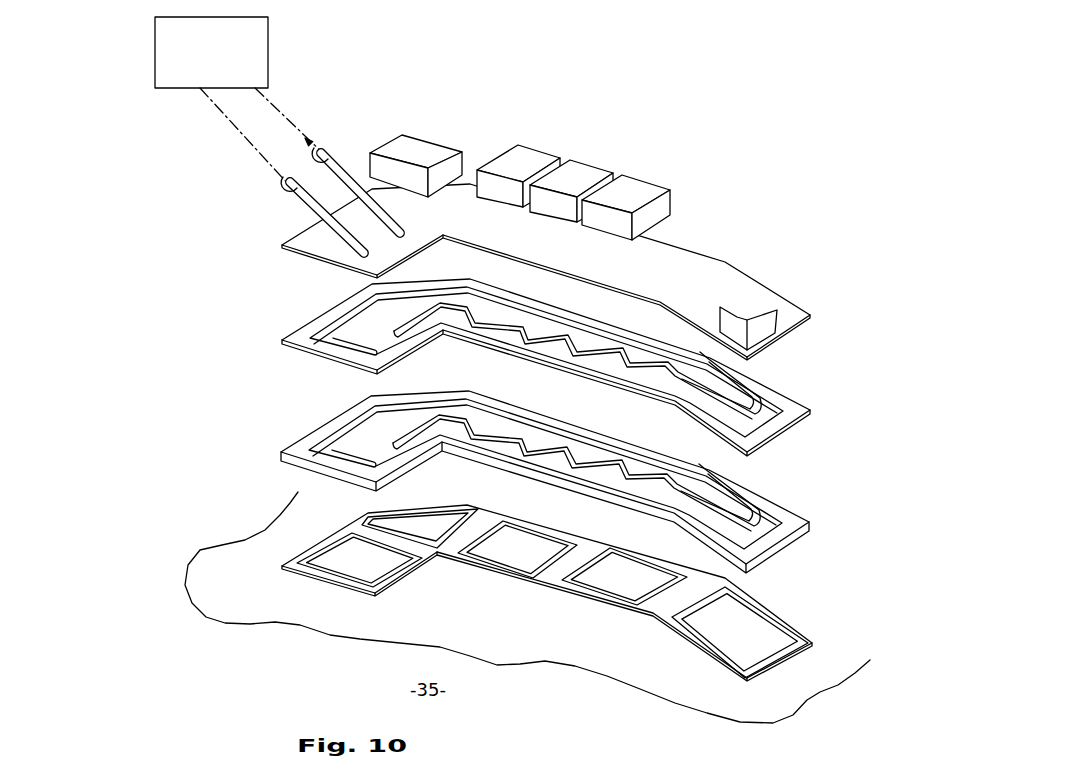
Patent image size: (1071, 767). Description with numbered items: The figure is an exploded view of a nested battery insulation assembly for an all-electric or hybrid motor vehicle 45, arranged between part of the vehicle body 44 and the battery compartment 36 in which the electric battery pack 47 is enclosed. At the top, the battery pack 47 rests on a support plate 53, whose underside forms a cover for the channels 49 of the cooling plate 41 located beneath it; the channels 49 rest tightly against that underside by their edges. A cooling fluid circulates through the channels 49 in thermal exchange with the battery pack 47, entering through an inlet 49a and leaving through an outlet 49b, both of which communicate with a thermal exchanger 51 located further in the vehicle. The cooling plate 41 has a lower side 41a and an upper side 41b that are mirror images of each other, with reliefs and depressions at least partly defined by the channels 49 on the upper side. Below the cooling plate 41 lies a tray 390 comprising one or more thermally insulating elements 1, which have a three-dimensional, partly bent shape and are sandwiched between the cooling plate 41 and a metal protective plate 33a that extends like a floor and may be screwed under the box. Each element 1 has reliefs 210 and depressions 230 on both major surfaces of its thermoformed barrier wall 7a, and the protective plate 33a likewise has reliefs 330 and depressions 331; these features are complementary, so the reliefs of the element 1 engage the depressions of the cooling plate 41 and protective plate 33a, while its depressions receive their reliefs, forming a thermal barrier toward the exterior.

The thermal exchanger 51 is at (178, 57).
The inlet 49a is at (305, 198).
The outlet 49b is at (333, 165).
The motor vehicle 45 is at (565, 235).
The electric battery pack 47 is at (593, 147).
The support plate 53 is at (723, 282).
The battery compartment 36 is at (779, 311).
The cooling plate 41 is at (555, 368).
The lower side 41a is at (773, 443).
The upper side 41b is at (325, 323).
The channels 49 is at (325, 343).
The tray 390 is at (549, 489).
The thermally insulating element 1 is at (305, 462).
The reliefs 210 is at (773, 530).
The depressions 230 is at (345, 437).
The barrier wall 7a is at (553, 460).
The protective plate 33a is at (547, 593).
The reliefs 330 is at (510, 548).
The depressions 331 is at (532, 583).
The body 44 is at (255, 605).